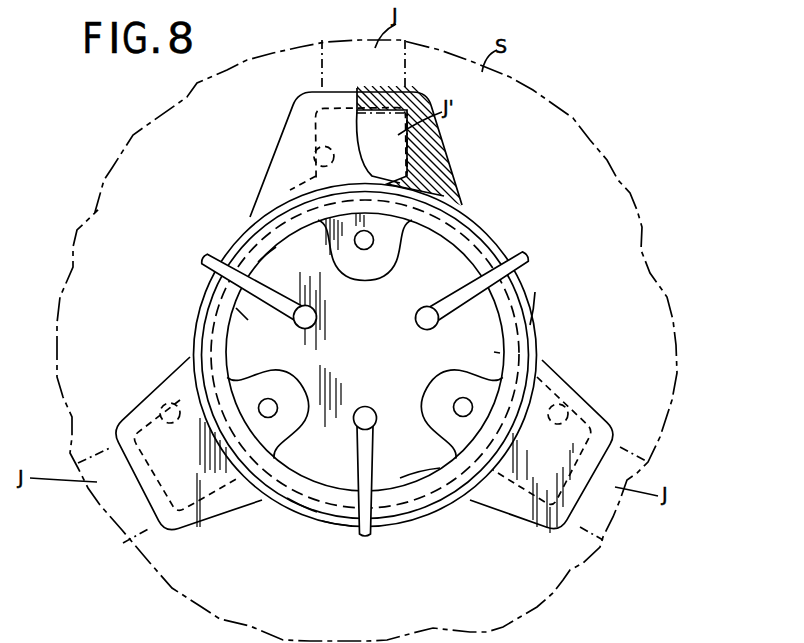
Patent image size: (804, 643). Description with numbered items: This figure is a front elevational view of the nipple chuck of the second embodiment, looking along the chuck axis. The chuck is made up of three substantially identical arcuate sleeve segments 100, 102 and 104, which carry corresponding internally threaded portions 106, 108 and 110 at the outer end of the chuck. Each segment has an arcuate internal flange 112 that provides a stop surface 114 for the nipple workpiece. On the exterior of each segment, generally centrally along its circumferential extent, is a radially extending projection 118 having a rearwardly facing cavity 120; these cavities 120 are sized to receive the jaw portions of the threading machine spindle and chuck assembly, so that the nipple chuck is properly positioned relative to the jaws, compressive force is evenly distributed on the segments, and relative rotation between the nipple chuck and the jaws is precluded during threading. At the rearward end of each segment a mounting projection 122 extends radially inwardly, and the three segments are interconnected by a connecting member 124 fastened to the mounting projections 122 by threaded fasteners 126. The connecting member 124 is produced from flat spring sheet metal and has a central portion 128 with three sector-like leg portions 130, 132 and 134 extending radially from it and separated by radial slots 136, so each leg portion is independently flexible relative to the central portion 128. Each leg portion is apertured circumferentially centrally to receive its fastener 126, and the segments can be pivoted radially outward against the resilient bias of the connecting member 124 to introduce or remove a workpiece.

The arcuate sleeve segment 100 is at (480, 232).
The arcuate sleeve segment 102 is at (536, 292).
The arcuate sleeve segment 104 is at (340, 527).
The internally threaded portion 106 is at (470, 200).
The internally threaded portion 108 is at (528, 318).
The internally threaded portion 110 is at (300, 503).
The arcuate internal flange 112 is at (462, 257).
The stop surface 114 is at (480, 258).
The radially extending projection 118 is at (296, 112).
The rearwardly facing cavity 120 is at (314, 153).
The mounting projection 122 is at (362, 262).
The connecting member 124 is at (436, 457).
The threaded fastener 126 is at (355, 243).
The central portion 128 is at (366, 372).
The sector like leg portion 130 is at (267, 262).
The sector like leg portion 132 is at (493, 355).
The sector like leg portion 134 is at (242, 315).
The radial slot 136 is at (528, 264).